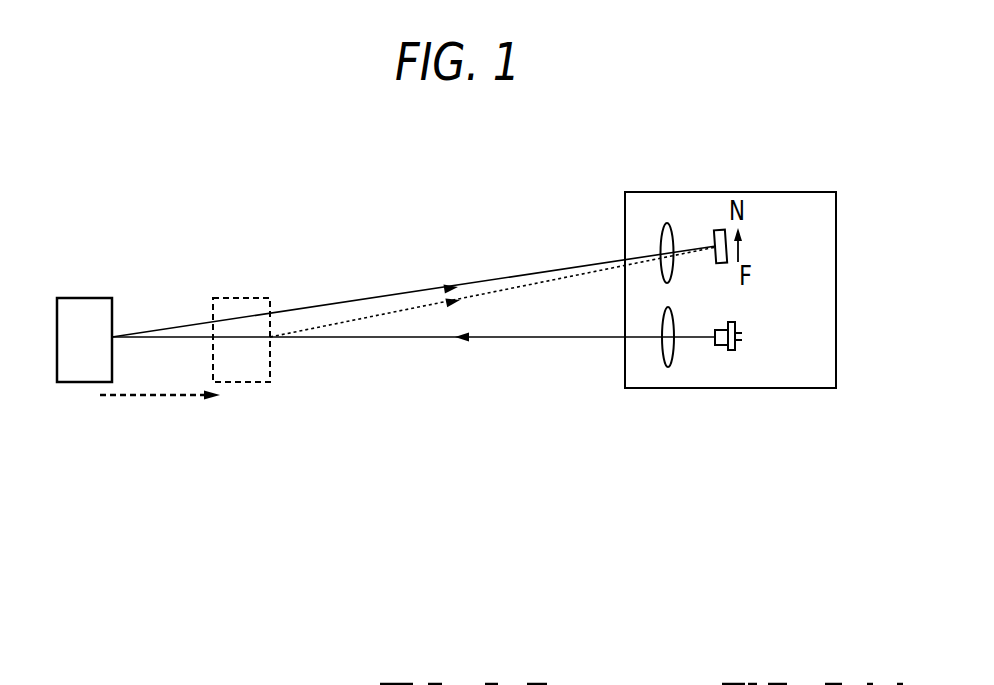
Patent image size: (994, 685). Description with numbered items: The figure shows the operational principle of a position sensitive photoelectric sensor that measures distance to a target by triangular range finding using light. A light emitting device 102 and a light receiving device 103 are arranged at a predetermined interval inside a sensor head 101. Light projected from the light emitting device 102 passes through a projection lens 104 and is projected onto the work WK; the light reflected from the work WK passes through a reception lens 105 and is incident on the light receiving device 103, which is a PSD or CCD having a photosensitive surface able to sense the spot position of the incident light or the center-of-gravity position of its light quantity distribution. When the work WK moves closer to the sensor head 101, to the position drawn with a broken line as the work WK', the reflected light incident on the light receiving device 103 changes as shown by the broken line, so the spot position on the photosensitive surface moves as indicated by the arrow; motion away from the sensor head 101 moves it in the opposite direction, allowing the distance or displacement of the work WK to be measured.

The sensor head 101 is at (817, 192).
The light emitting device 102 is at (732, 350).
The light receiving device 103 is at (718, 228).
The projection lens 104 is at (668, 368).
The reception lens 105 is at (665, 223).
The work WK is at (99, 305).
The work WK' is at (260, 305).